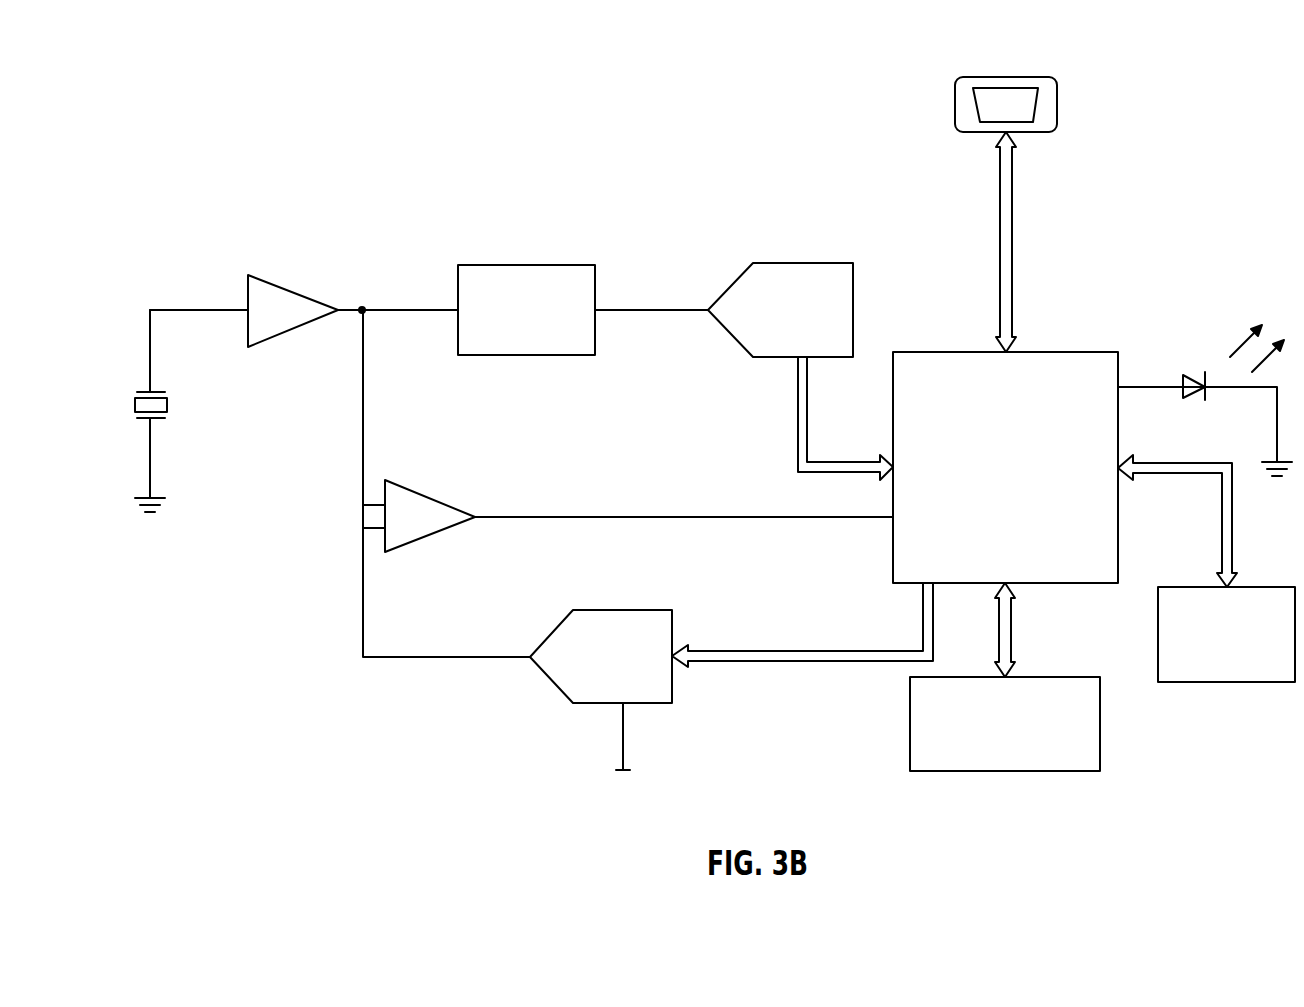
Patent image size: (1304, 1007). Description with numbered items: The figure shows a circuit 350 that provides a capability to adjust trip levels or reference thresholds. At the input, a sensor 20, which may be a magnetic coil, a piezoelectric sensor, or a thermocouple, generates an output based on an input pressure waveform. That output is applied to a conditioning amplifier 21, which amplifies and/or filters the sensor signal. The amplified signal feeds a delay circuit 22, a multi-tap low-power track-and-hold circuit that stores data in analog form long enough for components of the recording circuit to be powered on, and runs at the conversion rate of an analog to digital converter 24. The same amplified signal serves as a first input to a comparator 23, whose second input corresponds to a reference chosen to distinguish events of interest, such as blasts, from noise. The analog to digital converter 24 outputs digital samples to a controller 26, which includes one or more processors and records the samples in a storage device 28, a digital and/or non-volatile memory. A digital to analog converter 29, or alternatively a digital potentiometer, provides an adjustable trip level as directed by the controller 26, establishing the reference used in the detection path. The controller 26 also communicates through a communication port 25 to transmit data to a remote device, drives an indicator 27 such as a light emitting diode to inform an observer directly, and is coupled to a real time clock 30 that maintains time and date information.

The circuit 350 is at (190, 200).
The sensor 20 is at (133, 404).
The conditioning amplifier 21 is at (293, 292).
The delay circuit 22 is at (545, 265).
The comparator 23 is at (433, 493).
The analog to digital converter 24 is at (805, 263).
The communication port 25 is at (1008, 77).
The controller 26 is at (1065, 352).
The indicator 27 is at (1195, 377).
The storage device 28 is at (1048, 677).
The digital to analog converter 29 is at (625, 610).
The real time clock 30 is at (1243, 587).